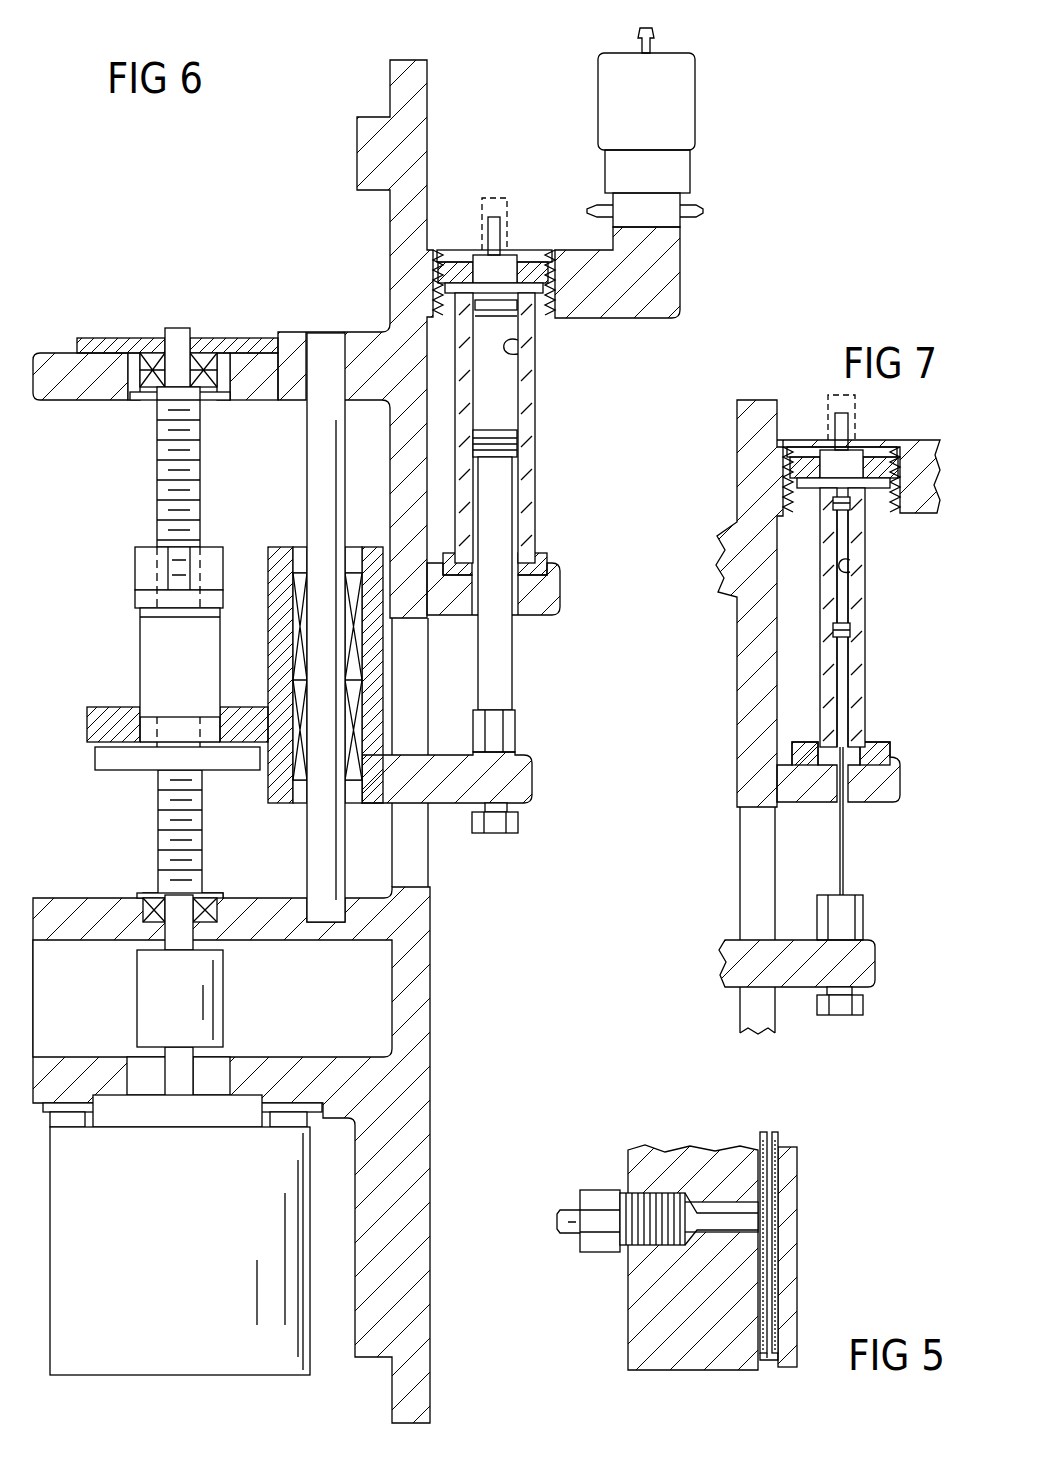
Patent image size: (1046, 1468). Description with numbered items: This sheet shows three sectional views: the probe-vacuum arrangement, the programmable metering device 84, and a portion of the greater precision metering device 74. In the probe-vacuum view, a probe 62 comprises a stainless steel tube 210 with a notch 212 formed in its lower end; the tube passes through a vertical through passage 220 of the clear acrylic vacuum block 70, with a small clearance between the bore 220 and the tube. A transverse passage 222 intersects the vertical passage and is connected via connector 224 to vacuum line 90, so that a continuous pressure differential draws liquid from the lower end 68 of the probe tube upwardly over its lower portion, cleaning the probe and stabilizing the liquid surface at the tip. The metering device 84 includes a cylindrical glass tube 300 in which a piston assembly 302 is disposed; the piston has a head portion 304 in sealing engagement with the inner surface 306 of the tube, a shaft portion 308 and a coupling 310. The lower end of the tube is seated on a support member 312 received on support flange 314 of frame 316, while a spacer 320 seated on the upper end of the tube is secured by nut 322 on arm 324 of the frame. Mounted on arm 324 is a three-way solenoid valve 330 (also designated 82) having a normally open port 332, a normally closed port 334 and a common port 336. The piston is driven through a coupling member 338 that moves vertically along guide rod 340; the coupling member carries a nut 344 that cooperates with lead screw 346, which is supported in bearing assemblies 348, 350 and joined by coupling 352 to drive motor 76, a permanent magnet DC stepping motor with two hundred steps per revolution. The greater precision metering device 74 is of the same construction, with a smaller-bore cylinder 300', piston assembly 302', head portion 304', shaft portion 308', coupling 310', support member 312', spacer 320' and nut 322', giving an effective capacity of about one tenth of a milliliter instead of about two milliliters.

In FIG. 5, the probe 62 is at (777, 1257).
In FIG. 5, the lower end (tip) of probe tube 68 is at (792, 1362).
In FIG. 5, the vacuum block 70 is at (624, 1353).
In FIG. 7, the greater precision metering device 74 is at (874, 600).
In FIG. 6, the drive motor 76 is at (262, 1368).
In FIG. 6, the three-way solenoid valve 82 is at (657, 124).
In FIG. 6, the programmable metering device 84 is at (542, 387).
In FIG. 5, the vacuum line 90 is at (570, 1235).
In FIG. 5, the stainless steel tube 210 is at (760, 1135).
In FIG. 5, the notch 212 is at (775, 1356).
In FIG. 5, the vertical through passage (bore) 220 is at (763, 1360).
In FIG. 5, the transverse passage 222 is at (725, 1212).
In FIG. 5, the connector 224 is at (587, 1200).
In FIG. 6, the cylindrical glass tube (metering cylinder) 300 is at (529, 428).
In FIG. 7, the cylinder 300' is at (874, 617).
In FIG. 6, the piston assembly 302 is at (554, 578).
In FIG. 7, the piston assembly 302' is at (883, 628).
In FIG. 6, the head portion 304 is at (533, 436).
In FIG. 7, the head portion 304' is at (878, 567).
In FIG. 6, the inner surface of tube 306 is at (523, 348).
In FIG. 7, the inner surface of tube 306 is at (858, 568).
In FIG. 6, the shaft portion 308 is at (526, 604).
In FIG. 7, the shaft portion 308' is at (865, 843).
In FIG. 6, the coupling 310 is at (522, 828).
In FIG. 7, the coupling 310' is at (874, 1014).
In FIG. 6, the support member 312 is at (525, 556).
In FIG. 7, the support member 312' is at (873, 744).
In FIG. 6, the support flange 314 is at (548, 612).
In FIG. 7, the support flange 314 is at (890, 803).
In FIG. 6, the frame 316 is at (390, 307).
In FIG. 7, the frame 316 is at (737, 715).
In FIG. 6, the spacer 320 is at (488, 245).
In FIG. 7, the spacer 320' is at (836, 441).
In FIG. 6, the nut 322 is at (496, 262).
In FIG. 7, the nut 322' is at (859, 460).
In FIG. 6, the arm of frame 324 is at (648, 308).
In FIG. 7, the arm of frame 324 is at (915, 508).
In FIG. 6, the three-way solenoid valve 330 is at (600, 128).
In FIG. 6, the normally open port 332 is at (654, 35).
In FIG. 6, the normally closed port 334 is at (700, 205).
In FIG. 6, the common port 336 is at (596, 205).
In FIG. 6, the coupling member 338 is at (530, 775).
In FIG. 7, the coupling member 338 is at (876, 967).
In FIG. 6, the guide rod 340 is at (308, 493).
In FIG. 6, the nut 344 is at (138, 645).
In FIG. 6, the lead screw 346 is at (162, 487).
In FIG. 6, the bearing assembly 348 is at (150, 350).
In FIG. 6, the bearing assembly 350 is at (155, 893).
In FIG. 6, the coupling 352 is at (225, 995).